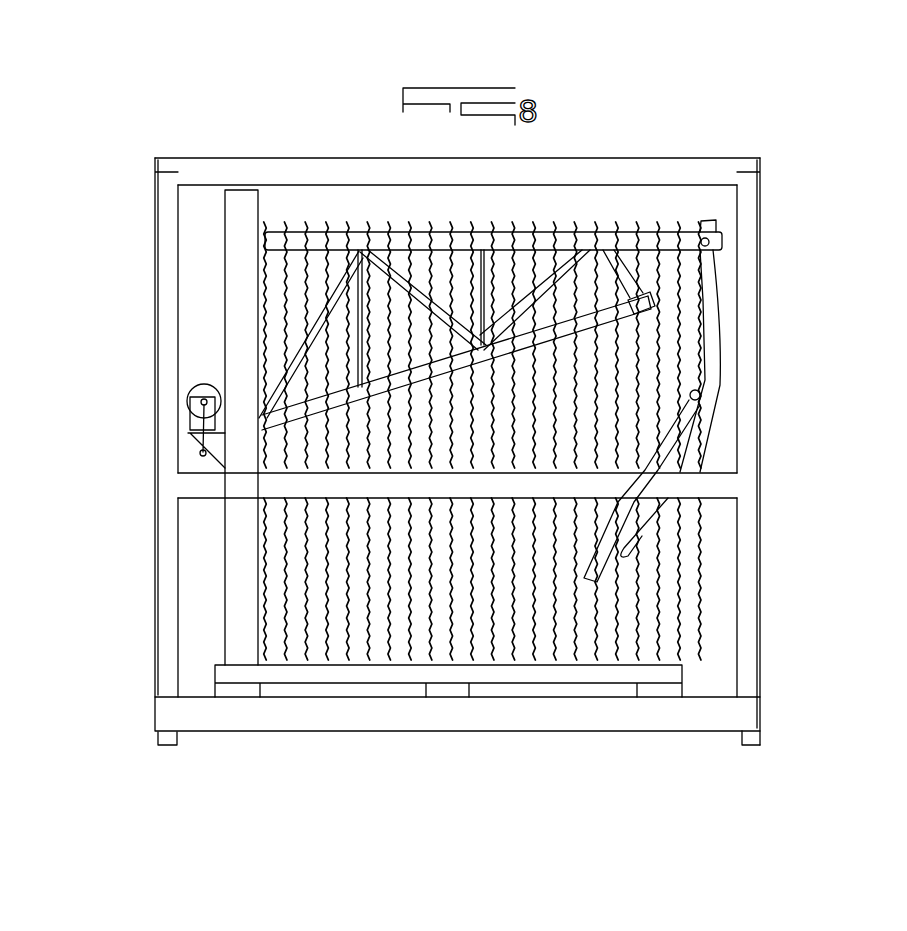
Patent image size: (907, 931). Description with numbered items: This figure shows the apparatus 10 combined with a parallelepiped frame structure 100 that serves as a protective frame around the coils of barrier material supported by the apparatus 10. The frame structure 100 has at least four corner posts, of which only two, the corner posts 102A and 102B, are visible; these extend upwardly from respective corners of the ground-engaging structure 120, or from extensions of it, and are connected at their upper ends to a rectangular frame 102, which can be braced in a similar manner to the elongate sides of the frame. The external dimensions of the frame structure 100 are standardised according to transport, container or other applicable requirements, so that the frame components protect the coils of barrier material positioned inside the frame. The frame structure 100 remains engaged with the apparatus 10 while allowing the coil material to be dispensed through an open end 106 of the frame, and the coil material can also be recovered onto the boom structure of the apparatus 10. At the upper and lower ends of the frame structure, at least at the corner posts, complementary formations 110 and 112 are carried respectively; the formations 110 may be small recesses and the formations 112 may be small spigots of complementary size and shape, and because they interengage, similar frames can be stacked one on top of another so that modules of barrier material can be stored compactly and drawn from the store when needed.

The frame structure 100 is at (779, 225).
The formations 110 is at (172, 140).
The rectangular frame 102 is at (213, 178).
The corner post 102A is at (168, 553).
The corner post 102B is at (745, 555).
The open end 106 is at (782, 396).
The apparatus 10 is at (630, 210).
The formations 112 is at (176, 746).
The ground-engaging structure 120 is at (172, 718).